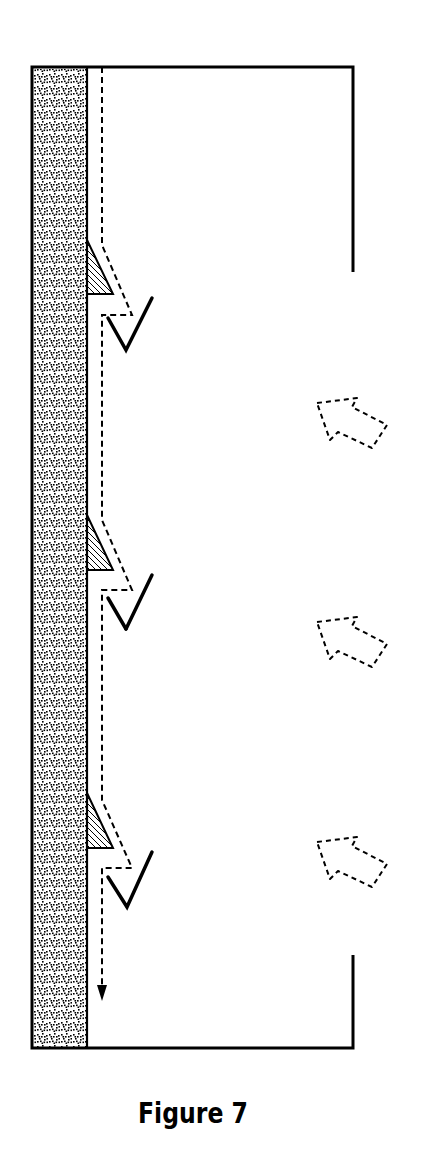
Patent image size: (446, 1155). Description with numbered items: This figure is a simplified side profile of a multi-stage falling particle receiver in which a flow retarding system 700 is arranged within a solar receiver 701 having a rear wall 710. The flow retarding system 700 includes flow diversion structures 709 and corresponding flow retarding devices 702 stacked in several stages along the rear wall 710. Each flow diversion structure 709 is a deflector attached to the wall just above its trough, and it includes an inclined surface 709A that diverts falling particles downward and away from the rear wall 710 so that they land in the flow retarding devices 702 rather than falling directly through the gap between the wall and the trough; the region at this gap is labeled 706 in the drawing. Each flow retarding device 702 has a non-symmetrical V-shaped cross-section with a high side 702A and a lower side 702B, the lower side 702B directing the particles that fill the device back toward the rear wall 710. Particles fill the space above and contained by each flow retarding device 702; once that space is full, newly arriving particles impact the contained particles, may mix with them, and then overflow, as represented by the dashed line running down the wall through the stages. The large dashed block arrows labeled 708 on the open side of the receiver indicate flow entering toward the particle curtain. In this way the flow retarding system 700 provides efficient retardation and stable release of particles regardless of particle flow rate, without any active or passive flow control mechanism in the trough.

The solar receiver 701 is at (225, 66).
The flow retarding system 700 is at (144, 275).
The rear wall 710 is at (88, 403).
The flow diversion structure 709 is at (95, 552).
The inclined surface 709A is at (100, 823).
The flow retarding device 702 is at (170, 596).
The high side 702A is at (136, 602).
The lower side 702B is at (111, 628).
The gap opening 706 is at (92, 589).
The airflow 708 is at (376, 407).